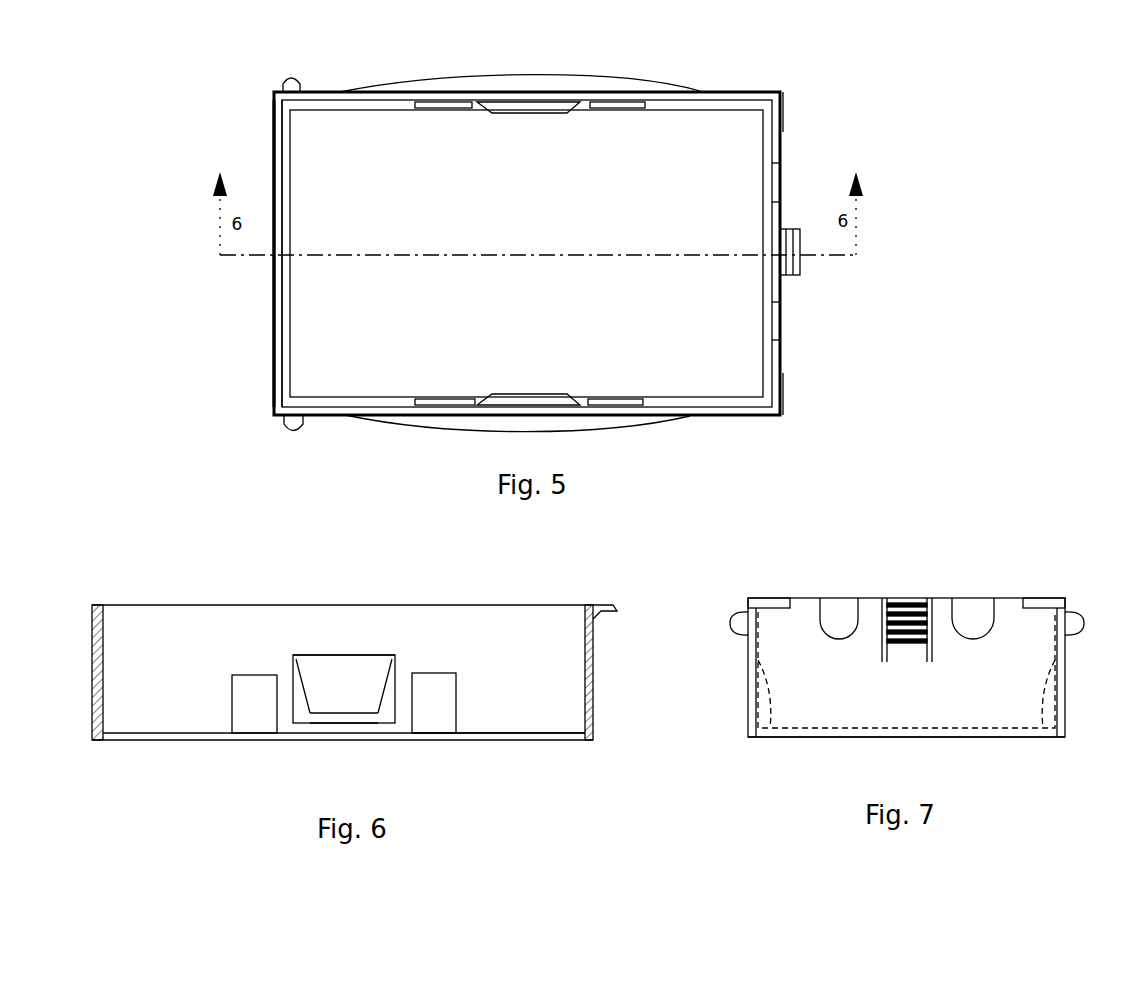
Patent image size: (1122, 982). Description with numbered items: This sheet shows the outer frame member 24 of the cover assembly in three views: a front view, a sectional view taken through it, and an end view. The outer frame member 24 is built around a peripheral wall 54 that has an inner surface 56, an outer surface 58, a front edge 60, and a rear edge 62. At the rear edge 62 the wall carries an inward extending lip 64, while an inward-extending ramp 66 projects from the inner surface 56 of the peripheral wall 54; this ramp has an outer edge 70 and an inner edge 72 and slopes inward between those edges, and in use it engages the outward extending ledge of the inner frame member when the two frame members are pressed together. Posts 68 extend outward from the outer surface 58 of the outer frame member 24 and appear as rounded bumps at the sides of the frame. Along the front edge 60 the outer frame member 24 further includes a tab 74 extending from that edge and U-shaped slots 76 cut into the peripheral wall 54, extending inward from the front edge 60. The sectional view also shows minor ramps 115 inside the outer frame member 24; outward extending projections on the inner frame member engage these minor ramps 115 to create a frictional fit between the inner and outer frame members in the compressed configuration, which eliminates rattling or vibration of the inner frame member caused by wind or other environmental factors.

In FIG. 5, the outer frame member 24 is at (218, 142).
In FIG. 6, the outer frame member 24 is at (140, 586).
In FIG. 7, the outer frame member 24 is at (952, 540).
In FIG. 5, the peripheral wall 54 is at (706, 100).
In FIG. 6, the peripheral wall 54 is at (175, 655).
In FIG. 7, the peripheral wall 54 is at (812, 693).
In FIG. 5, the inner surface 56 is at (302, 312).
In FIG. 5, the outer surface 58 is at (262, 320).
In FIG. 6, the front edge 60 is at (535, 604).
In FIG. 7, the front edge 60 is at (800, 598).
In FIG. 6, the rear edge 62 is at (540, 742).
In FIG. 7, the rear edge 62 is at (816, 740).
In FIG. 5, the inward extending lip 64 is at (372, 112).
In FIG. 6, the inward extending lip 64 is at (472, 737).
In FIG. 5, the inward-extending ramp 66 is at (528, 112).
In FIG. 6, the inward-extending ramp 66 is at (334, 693).
In FIG. 5, the posts 68 is at (288, 80).
In FIG. 7, the posts 68 is at (736, 624).
In FIG. 6, the outer edge 70 is at (343, 655).
In FIG. 6, the inner edge 72 is at (345, 725).
In FIG. 5, the tab 74 is at (802, 262).
In FIG. 6, the tab 74 is at (614, 604).
In FIG. 7, the tab 74 is at (905, 598).
In FIG. 7, the U-shaped slots 76 is at (838, 598).
In FIG. 6, the minor ramps 115 is at (241, 709).